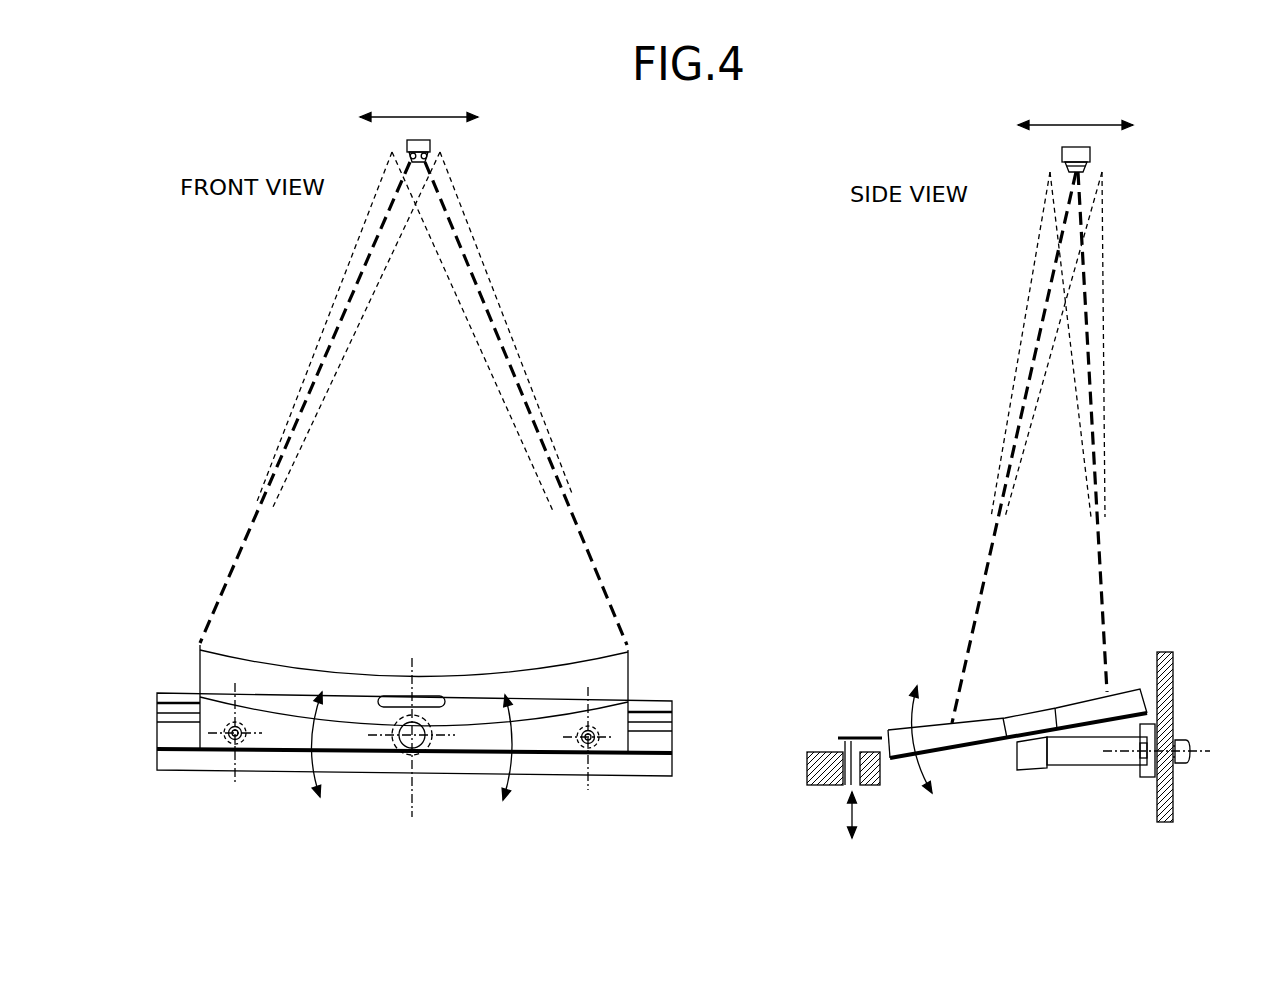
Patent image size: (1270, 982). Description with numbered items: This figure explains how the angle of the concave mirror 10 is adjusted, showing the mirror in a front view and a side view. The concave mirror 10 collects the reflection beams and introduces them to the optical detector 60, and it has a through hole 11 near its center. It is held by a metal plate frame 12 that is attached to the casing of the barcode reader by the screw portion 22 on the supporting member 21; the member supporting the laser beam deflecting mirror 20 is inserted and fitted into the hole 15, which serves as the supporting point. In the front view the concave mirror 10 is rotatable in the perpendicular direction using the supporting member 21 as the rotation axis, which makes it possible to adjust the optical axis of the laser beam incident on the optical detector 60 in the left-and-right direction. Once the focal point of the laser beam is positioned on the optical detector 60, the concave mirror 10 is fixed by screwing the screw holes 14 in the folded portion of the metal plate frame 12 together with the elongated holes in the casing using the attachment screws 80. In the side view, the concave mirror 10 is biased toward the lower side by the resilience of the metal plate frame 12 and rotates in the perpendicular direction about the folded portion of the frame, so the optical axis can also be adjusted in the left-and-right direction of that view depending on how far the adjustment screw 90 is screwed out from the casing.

The optical detector 60 is at (432, 146).
The concave mirror 10 is at (612, 673).
The through hole 11 is at (433, 697).
The metal plate frame 12 is at (653, 776).
The screw holes 14 is at (220, 752).
The hole 15 is at (387, 752).
The laser beam deflecting mirror 20 is at (1017, 764).
The supporting member 21 is at (427, 752).
The screw portion 22 is at (1175, 784).
The attachment screws 80 is at (255, 752).
The adjustment screw 90 is at (837, 747).